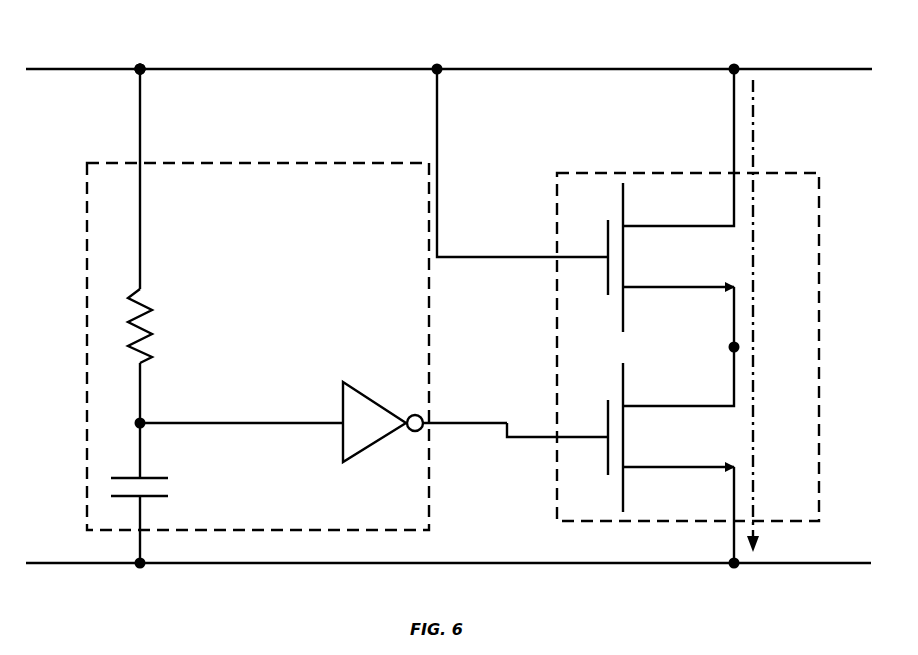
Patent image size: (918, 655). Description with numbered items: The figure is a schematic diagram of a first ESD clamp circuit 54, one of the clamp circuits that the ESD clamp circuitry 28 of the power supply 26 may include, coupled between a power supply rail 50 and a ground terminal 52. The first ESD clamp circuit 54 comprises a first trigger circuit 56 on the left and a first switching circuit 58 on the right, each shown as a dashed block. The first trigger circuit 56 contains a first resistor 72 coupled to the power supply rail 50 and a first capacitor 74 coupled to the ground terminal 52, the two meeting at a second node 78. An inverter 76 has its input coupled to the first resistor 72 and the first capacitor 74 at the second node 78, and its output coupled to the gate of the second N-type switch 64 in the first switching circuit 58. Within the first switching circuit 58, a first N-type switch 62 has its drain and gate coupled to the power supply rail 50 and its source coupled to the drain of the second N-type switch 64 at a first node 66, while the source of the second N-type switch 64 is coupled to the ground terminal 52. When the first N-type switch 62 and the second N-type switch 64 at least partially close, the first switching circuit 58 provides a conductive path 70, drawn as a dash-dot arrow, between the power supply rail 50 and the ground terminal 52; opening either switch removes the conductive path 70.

The power supply 26 is at (120, 56).
The ESD clamp circuitry 28 is at (140, 69).
The first ESD clamp circuit 54 is at (140, 69).
The power supply rail 50 is at (547, 67).
The ground terminal 52 is at (504, 562).
The first trigger circuit 56 is at (87, 318).
The first switching circuit 58 is at (819, 338).
The first N-type switch 62 is at (622, 204).
The second N-type switch 64 is at (622, 384).
The first node 66 is at (730, 348).
The conductive path 70 is at (754, 316).
The first resistor 72 is at (152, 320).
The first capacitor 74 is at (126, 476).
The inverter 76 is at (375, 402).
The second node 78 is at (146, 420).